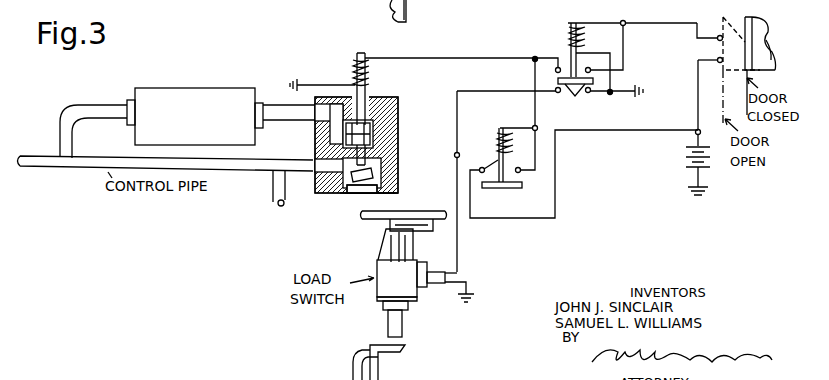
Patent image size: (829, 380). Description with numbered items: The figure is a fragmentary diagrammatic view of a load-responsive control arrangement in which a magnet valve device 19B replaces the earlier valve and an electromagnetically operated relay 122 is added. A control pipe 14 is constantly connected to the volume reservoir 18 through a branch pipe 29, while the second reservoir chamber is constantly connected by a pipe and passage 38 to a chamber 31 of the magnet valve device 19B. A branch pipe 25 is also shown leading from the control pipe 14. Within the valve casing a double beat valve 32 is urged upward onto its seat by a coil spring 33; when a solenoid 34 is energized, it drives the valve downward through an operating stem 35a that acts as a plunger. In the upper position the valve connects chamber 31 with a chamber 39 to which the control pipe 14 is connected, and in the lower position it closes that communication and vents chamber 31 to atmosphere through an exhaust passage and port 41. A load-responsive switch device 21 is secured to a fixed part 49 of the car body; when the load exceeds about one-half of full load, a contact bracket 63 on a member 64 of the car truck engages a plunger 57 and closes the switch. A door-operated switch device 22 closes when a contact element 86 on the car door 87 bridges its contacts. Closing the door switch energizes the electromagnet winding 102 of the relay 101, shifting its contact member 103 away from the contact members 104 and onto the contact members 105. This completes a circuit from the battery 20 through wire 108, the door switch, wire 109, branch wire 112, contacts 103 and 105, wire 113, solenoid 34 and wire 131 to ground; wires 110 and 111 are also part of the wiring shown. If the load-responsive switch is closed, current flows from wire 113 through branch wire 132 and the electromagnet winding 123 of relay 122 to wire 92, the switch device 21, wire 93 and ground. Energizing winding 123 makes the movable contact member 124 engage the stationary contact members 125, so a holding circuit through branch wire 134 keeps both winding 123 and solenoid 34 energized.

The control pipe 14 is at (81, 170).
The volume reservoir 18 is at (160, 82).
The magnet valve device 19B is at (350, 203).
The battery 20 is at (689, 143).
The load-responsive switch device 21 is at (368, 263).
The door-operated switch device 22 is at (713, 30).
The branch pipe 25 is at (268, 200).
The branch pipe 29 is at (105, 112).
The chamber 31 is at (381, 146).
The double beat valve 32 is at (372, 131).
The coil spring 33 is at (386, 190).
The solenoid 34 is at (356, 60).
The operating stem 35a is at (364, 98).
The pipe and passage 38 is at (286, 121).
The chamber 39 is at (380, 175).
The exhaust passage and port 41 is at (399, 105).
The fixed part of the car body 49 is at (410, 214).
The plunger 57 is at (404, 323).
The contact bracket 63 is at (400, 346).
The member of the car truck 64 is at (355, 356).
The contact element 86 is at (752, 36).
The car door 87 is at (766, 62).
The wire 92 is at (459, 256).
The wire 93 is at (467, 286).
The relay 101 is at (560, 28).
The electromagnet winding 102 is at (580, 47).
The contact member 103 is at (557, 81).
The contact members 104 is at (571, 101).
The contact members 105 is at (556, 67).
The wire 108 is at (697, 112).
The wire 109 is at (694, 36).
The wire 110 is at (620, 80).
The ground wire 111 is at (608, 93).
The branch wire 112 is at (626, 49).
The wire 113 is at (421, 60).
The relay 122 is at (492, 132).
The electromagnet winding 123 is at (496, 146).
The movable contact member 124 is at (530, 192).
The stationary contact members 125 is at (509, 161).
The wire 131 is at (340, 85).
The branch wire 132 is at (531, 106).
The branch wire 134 is at (559, 150).